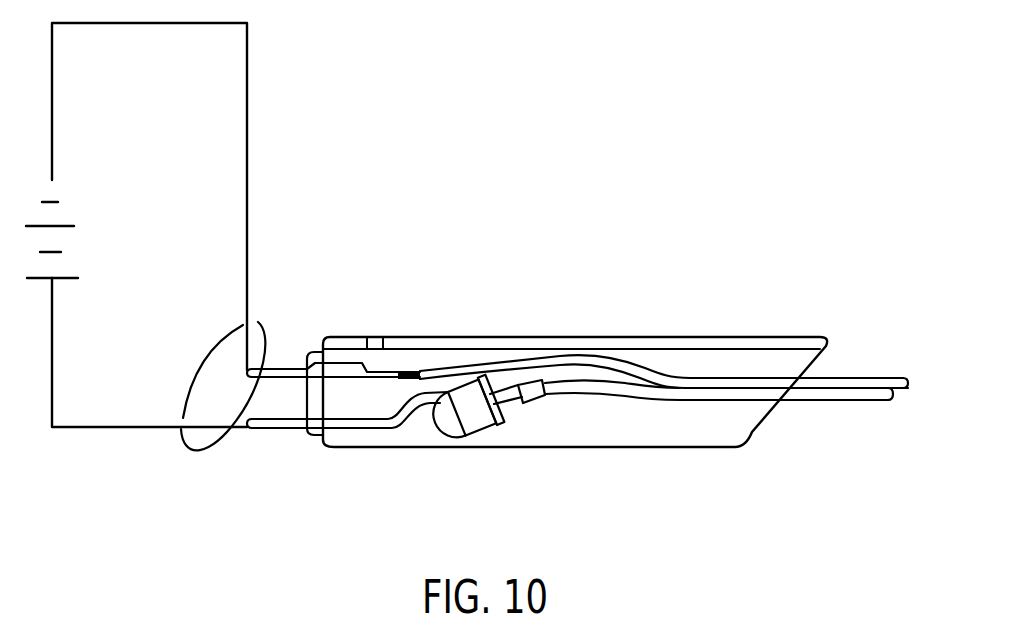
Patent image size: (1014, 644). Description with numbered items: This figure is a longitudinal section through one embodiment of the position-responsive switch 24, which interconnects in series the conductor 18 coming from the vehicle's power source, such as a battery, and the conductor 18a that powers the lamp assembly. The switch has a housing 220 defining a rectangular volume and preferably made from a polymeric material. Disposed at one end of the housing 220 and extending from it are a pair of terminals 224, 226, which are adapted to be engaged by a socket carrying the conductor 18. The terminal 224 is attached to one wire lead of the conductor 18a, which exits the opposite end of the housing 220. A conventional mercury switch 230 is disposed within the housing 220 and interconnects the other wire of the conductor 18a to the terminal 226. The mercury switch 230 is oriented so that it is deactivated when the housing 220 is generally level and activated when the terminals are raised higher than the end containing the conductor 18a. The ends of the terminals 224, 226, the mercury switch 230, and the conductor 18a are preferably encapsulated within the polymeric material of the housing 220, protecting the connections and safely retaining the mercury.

The conductor 18 is at (198, 452).
The position-responsive switch 24 is at (708, 285).
The housing 220 is at (700, 453).
The terminal 224 is at (338, 377).
The terminal 226 is at (278, 433).
The mercury switch 230 is at (504, 426).
The conductor 18a is at (820, 403).